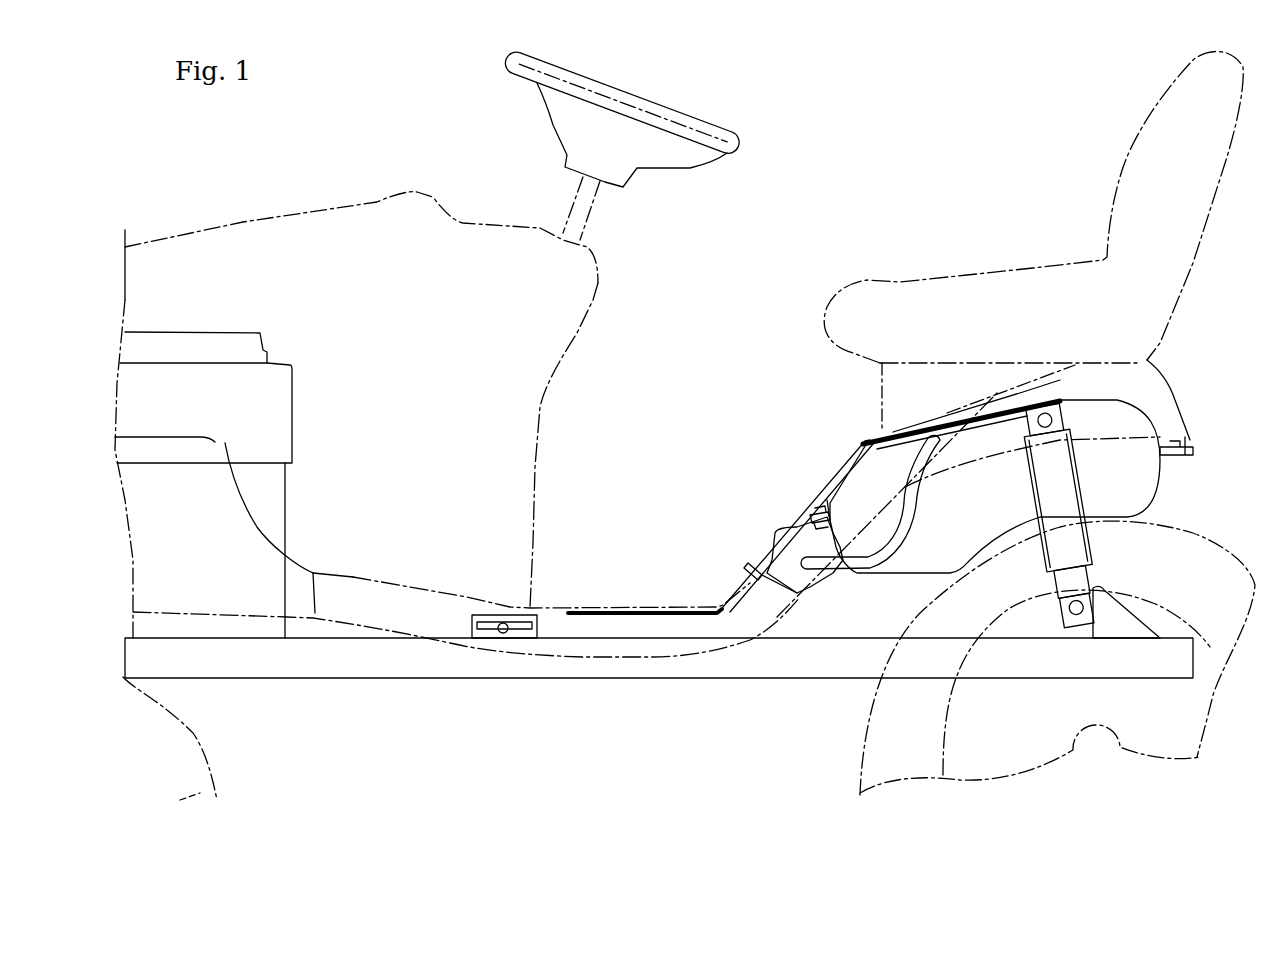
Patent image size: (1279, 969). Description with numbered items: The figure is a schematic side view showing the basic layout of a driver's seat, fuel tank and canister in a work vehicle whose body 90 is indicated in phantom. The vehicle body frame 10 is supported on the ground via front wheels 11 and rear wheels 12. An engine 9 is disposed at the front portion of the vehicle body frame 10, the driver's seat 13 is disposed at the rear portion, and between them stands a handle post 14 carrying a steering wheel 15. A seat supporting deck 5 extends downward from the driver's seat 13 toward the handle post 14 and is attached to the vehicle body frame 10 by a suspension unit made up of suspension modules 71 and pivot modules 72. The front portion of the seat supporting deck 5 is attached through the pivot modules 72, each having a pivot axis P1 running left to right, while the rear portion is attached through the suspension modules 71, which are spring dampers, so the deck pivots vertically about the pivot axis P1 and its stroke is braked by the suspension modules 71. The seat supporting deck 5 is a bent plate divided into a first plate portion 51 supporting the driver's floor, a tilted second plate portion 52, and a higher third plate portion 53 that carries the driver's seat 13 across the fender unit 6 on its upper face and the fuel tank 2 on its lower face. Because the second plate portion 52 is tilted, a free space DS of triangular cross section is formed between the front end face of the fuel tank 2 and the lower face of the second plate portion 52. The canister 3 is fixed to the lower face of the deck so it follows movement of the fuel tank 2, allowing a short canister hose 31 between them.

The hood / vehicle body 90 is at (243, 222).
The steering wheel 15 is at (703, 117).
The driver's seat 13 is at (975, 278).
The handle post 14 is at (597, 295).
The engine 9 is at (283, 367).
The vehicle body frame 10 is at (620, 680).
The front wheels 11 is at (203, 750).
The rear wheels 12 is at (863, 750).
The pivot modules 72 is at (487, 637).
The pivot axis P1 is at (503, 623).
The first plate portion 51 is at (640, 607).
The seat supporting deck 5 is at (843, 463).
The third plate portion 53 is at (957, 423).
The fuel tank 2 is at (1155, 488).
The canister hose 31 is at (907, 503).
The canister 3 is at (830, 580).
The fender unit 6 is at (808, 503).
The second plate portion 52 is at (757, 557).
The suspension modules 71 is at (1087, 543).
The free space DS is at (800, 604).